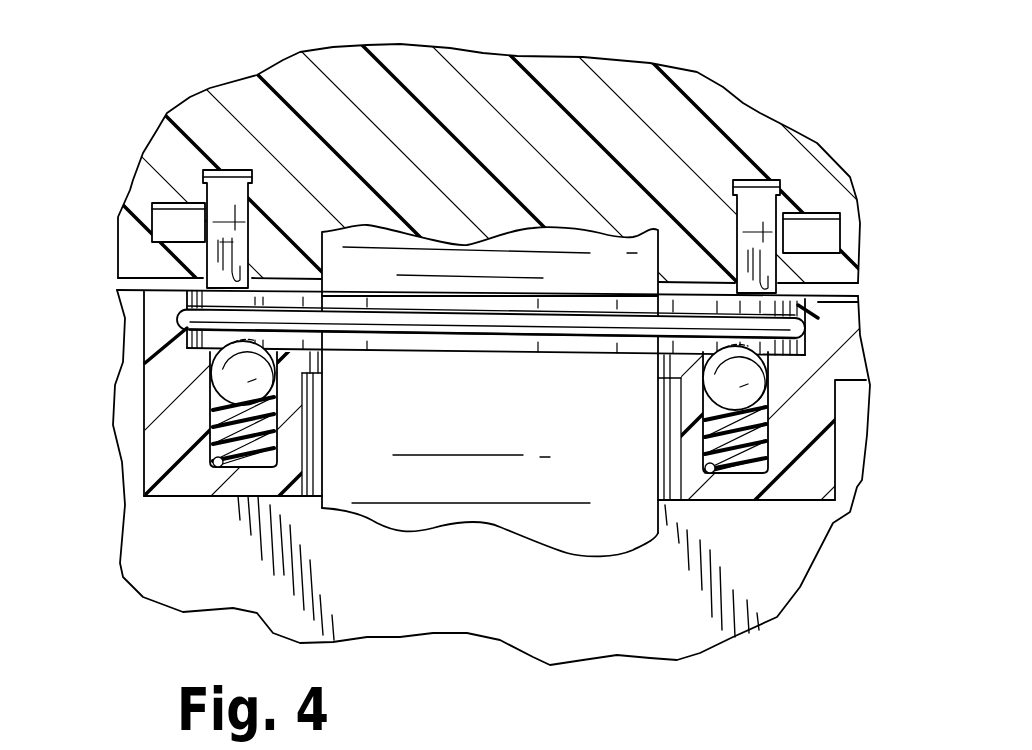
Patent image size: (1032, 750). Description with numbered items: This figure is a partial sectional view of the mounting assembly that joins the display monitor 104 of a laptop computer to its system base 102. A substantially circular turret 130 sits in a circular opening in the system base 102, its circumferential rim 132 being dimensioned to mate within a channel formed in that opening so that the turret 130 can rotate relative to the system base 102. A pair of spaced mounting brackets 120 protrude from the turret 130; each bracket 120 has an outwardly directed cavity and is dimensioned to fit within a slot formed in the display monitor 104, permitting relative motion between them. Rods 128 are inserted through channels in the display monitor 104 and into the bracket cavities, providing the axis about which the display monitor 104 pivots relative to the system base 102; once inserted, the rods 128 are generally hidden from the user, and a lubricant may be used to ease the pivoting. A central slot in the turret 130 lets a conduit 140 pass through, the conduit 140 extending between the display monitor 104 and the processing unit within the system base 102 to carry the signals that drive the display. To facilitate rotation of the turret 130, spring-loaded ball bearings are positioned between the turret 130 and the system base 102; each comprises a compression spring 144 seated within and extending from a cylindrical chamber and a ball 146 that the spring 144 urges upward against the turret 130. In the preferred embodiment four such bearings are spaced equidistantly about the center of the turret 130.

The system base 102 is at (738, 598).
The display monitor 104 is at (637, 85).
The mounting bracket 120 is at (216, 168).
The rod 128 is at (185, 220).
The turret 130 is at (520, 343).
The circumferential rim 132 is at (185, 316).
The conduit 140 is at (622, 507).
The compression spring 144 is at (210, 428).
The ball 146 is at (227, 366).